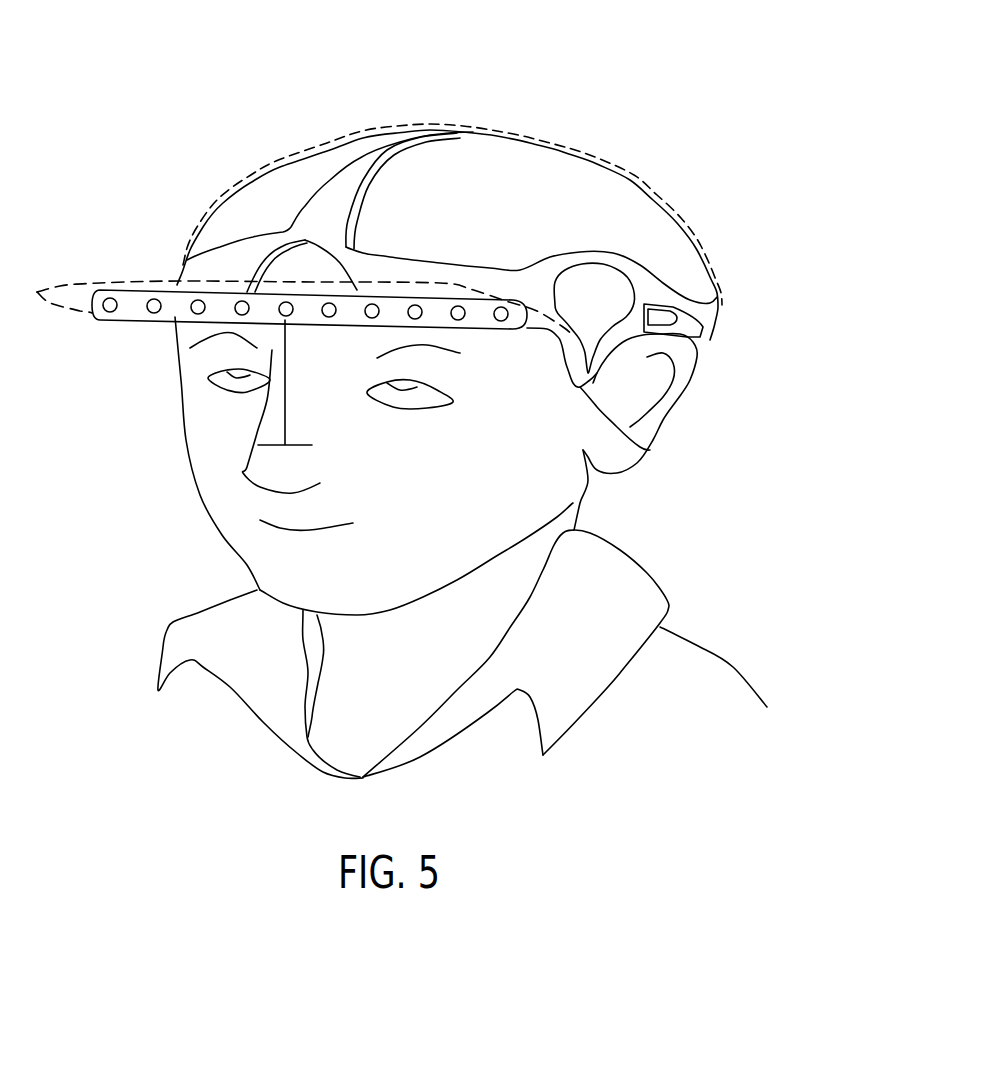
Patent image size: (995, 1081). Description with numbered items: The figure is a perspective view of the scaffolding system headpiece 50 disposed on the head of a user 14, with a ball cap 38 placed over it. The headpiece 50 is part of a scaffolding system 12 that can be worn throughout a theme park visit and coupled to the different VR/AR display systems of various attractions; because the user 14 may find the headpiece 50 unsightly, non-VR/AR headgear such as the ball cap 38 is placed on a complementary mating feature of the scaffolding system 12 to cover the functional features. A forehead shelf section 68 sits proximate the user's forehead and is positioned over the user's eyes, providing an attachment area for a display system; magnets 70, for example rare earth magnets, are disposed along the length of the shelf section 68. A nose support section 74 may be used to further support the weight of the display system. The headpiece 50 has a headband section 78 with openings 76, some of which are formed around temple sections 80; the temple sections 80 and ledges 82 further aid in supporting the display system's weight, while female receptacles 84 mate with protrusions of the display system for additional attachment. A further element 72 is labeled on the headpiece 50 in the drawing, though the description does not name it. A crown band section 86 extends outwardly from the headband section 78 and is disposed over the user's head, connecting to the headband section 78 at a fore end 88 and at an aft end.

The scaffolding system 12 is at (379, 209).
The user 14 is at (692, 533).
The ball cap 38 is at (613, 163).
The headpiece 50 is at (434, 251).
The shelf section 68 is at (390, 312).
The magnets 70 is at (195, 314).
The lower rim member 72 is at (513, 280).
The nose support section 74 is at (287, 433).
The openings 76 is at (313, 265).
The headband section 78 is at (465, 275).
The temple sections 80 is at (653, 442).
The ledges 82 is at (718, 318).
The female receptacles 84 is at (688, 327).
The crown band section 86 is at (337, 192).
The fore end 88 is at (310, 230).